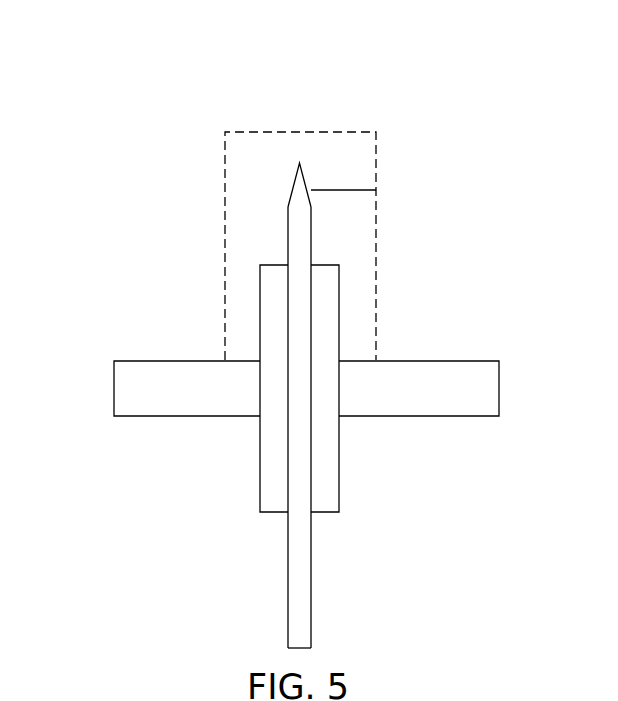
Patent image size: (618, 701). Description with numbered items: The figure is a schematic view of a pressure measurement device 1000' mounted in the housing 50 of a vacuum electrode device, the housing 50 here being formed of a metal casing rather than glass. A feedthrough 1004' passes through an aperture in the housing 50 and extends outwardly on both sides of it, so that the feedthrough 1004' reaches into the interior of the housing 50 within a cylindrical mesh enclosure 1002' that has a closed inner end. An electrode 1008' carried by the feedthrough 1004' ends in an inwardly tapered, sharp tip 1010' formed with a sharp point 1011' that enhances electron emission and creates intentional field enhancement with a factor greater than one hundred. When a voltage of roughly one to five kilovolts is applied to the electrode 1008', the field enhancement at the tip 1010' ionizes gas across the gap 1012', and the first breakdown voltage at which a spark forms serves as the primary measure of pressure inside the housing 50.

The pressure measurement device 1000' is at (273, 344).
The enclosure 1002' is at (244, 246).
The feedthrough 1004' is at (243, 388).
The electrode 1008' is at (253, 587).
The tip 1010' is at (223, 418).
The sharp point 1011' is at (310, 142).
The gap 1012' is at (389, 176).
The housing 50 is at (114, 387).